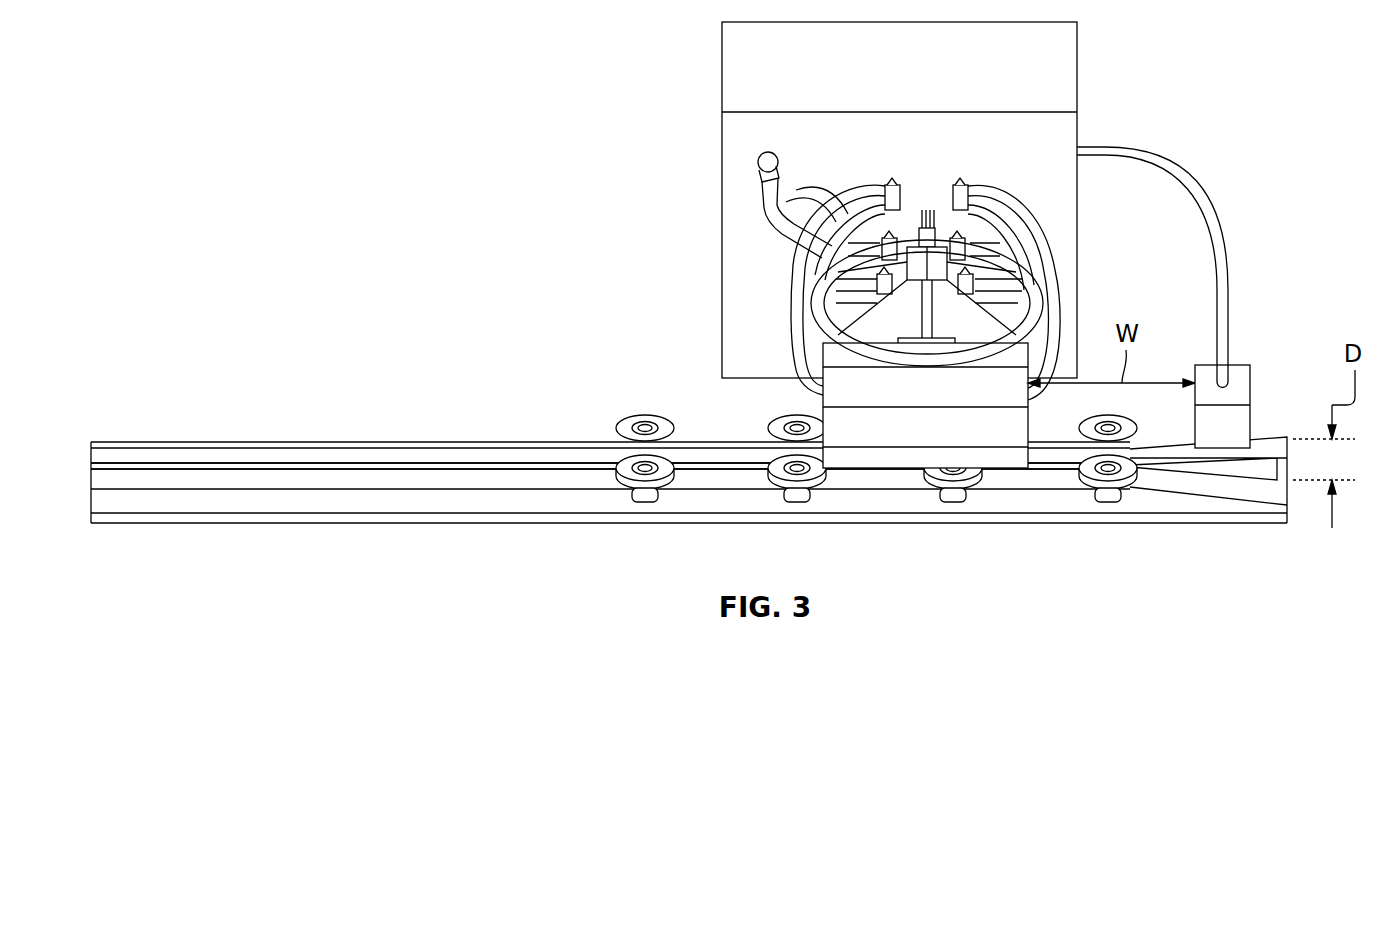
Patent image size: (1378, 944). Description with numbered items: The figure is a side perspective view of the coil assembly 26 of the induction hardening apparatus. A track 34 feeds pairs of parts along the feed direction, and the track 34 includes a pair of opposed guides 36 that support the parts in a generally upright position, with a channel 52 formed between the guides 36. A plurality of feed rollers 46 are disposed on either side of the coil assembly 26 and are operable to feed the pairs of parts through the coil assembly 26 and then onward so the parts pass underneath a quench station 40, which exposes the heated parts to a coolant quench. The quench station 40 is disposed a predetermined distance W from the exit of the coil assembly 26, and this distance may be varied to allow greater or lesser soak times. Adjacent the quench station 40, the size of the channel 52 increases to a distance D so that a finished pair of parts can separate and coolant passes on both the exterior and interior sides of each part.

The coil assembly 26 is at (767, 245).
The track 34 is at (196, 537).
The guides 36 is at (103, 480).
The quench station 40 is at (1250, 383).
The feed rollers 46 is at (645, 502).
The channel 52 is at (1260, 447).